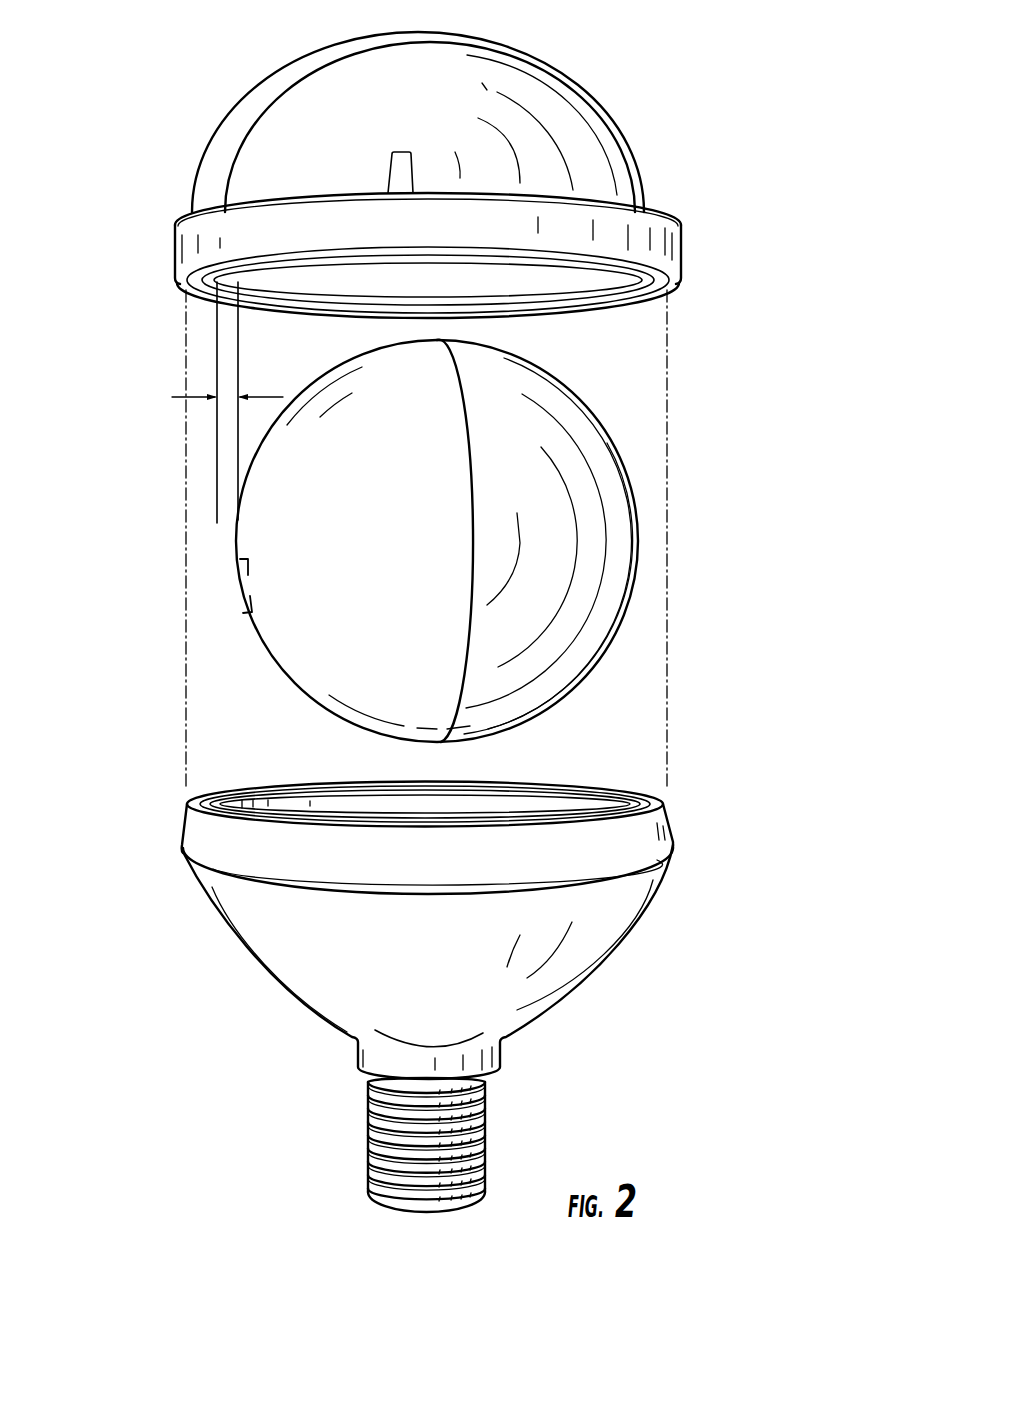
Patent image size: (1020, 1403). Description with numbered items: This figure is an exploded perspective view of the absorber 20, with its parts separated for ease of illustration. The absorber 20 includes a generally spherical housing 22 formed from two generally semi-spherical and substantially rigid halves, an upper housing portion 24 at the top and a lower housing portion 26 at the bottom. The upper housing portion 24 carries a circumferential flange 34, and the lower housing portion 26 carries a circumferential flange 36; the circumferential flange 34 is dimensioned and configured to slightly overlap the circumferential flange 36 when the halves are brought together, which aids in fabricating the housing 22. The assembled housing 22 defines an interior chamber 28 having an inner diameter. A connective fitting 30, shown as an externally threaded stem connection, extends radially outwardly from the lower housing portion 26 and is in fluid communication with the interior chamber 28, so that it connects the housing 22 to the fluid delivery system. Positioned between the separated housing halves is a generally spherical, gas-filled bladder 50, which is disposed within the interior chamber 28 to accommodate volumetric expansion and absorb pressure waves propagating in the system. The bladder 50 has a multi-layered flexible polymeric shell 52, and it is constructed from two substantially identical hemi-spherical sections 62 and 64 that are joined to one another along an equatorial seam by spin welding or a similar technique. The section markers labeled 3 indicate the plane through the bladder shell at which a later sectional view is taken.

The absorber 20 is at (425, 612).
The housing 22 is at (222, 125).
The upper housing portion 24 is at (542, 86).
The circumferential flange 34 is at (175, 252).
The bladder 50 is at (498, 544).
The multi-layered flexible polymeric shell 52 is at (630, 459).
The hemi-spherical section 62 is at (318, 668).
The hemi-spherical section 64 is at (590, 634).
The section line 3- 3 is at (250, 611).
The interior chamber 28 is at (557, 806).
The circumferential flange 36 is at (200, 832).
The lower housing portion 26 is at (592, 957).
The connective fitting 30 is at (372, 1119).